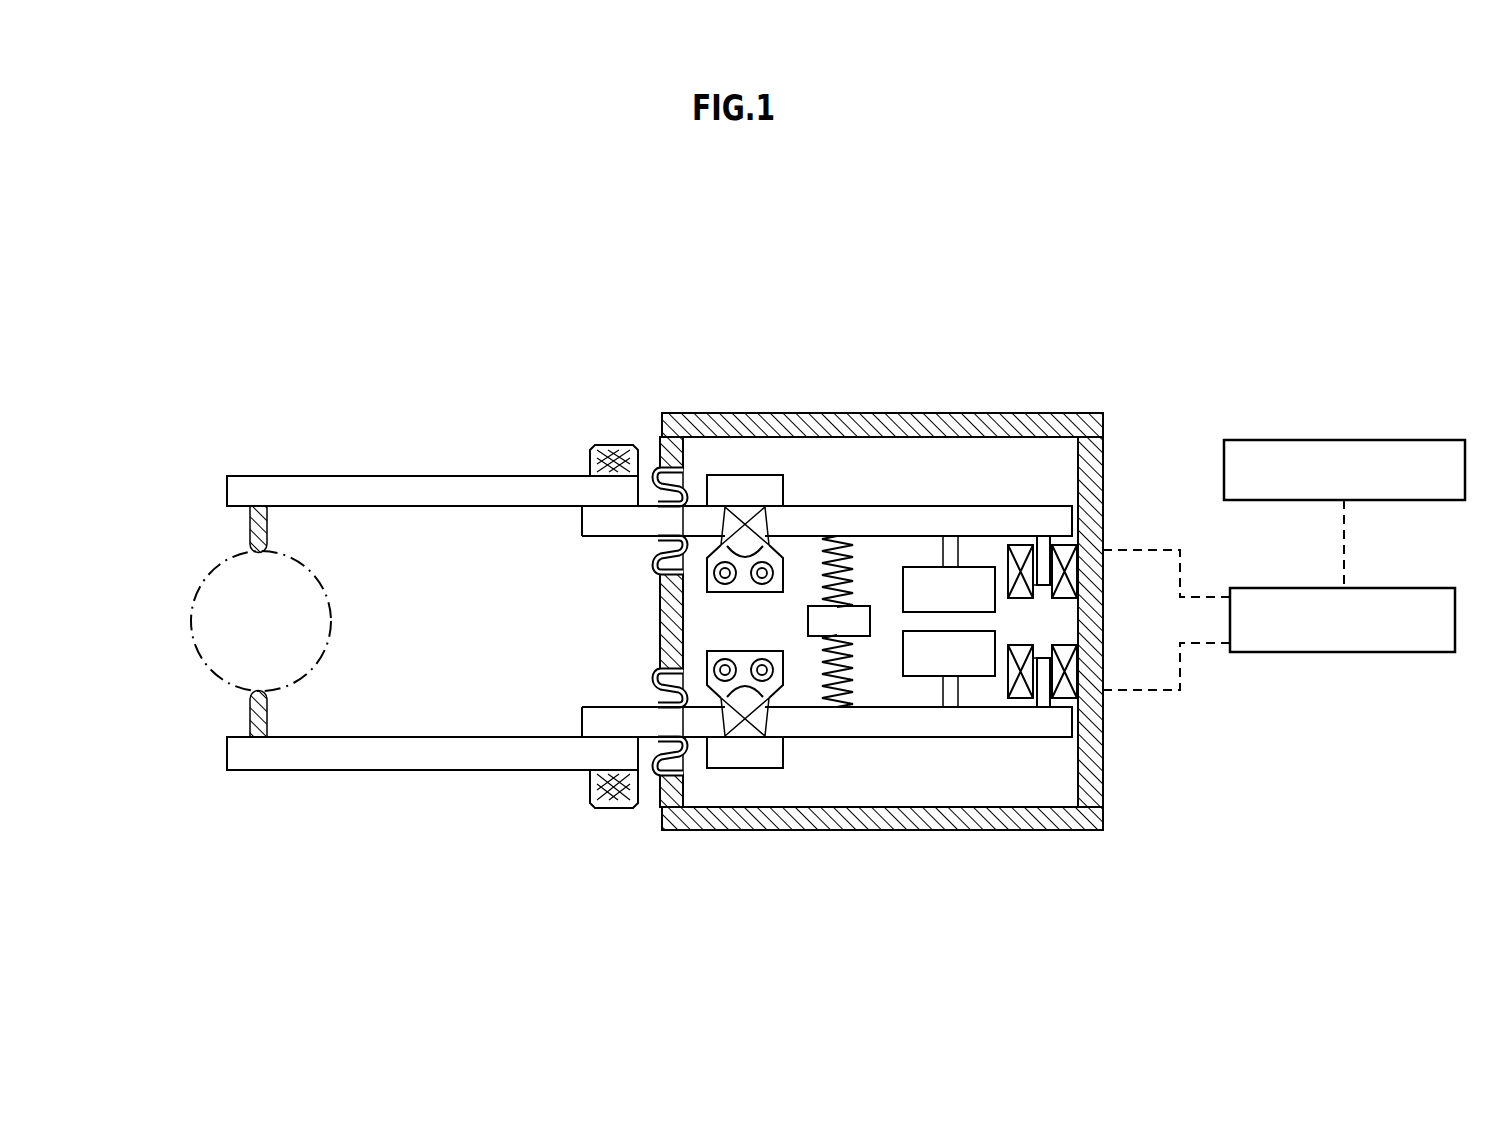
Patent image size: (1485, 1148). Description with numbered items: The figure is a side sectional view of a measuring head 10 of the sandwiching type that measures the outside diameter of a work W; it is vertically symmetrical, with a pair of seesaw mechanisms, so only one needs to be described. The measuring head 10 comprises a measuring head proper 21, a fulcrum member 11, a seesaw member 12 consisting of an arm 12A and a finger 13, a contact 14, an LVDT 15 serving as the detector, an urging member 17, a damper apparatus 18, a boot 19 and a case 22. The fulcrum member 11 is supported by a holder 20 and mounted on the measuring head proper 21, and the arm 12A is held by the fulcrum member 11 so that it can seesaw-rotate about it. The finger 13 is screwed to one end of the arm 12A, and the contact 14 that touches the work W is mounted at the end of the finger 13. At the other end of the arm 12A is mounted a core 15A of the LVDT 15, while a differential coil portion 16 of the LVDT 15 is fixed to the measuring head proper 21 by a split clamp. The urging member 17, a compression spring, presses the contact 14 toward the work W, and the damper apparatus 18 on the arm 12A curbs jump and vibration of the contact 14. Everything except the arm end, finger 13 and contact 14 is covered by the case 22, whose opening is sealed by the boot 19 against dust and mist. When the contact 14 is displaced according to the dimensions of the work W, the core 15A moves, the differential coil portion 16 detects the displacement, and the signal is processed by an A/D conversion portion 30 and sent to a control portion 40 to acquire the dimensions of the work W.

The measuring head 10 is at (908, 326).
The fulcrum member 11 is at (738, 621).
The seesaw member 12 is at (576, 437).
The arm 12A is at (826, 524).
The finger 13 is at (403, 477).
The contact 14 is at (250, 521).
The LVDT (differential transformer) 15 is at (1085, 621).
The core 15A is at (1046, 659).
The differential coil portion 16 is at (1062, 534).
The urging member 17 is at (848, 590).
The damper apparatus 18 is at (992, 633).
The boot 19 is at (658, 567).
The holder 20 is at (744, 652).
The measuring head proper 21 is at (953, 786).
The case 22 is at (957, 423).
The A/D conversion portion 30 is at (1426, 588).
The control portion 40 is at (1426, 440).
The work W is at (192, 608).